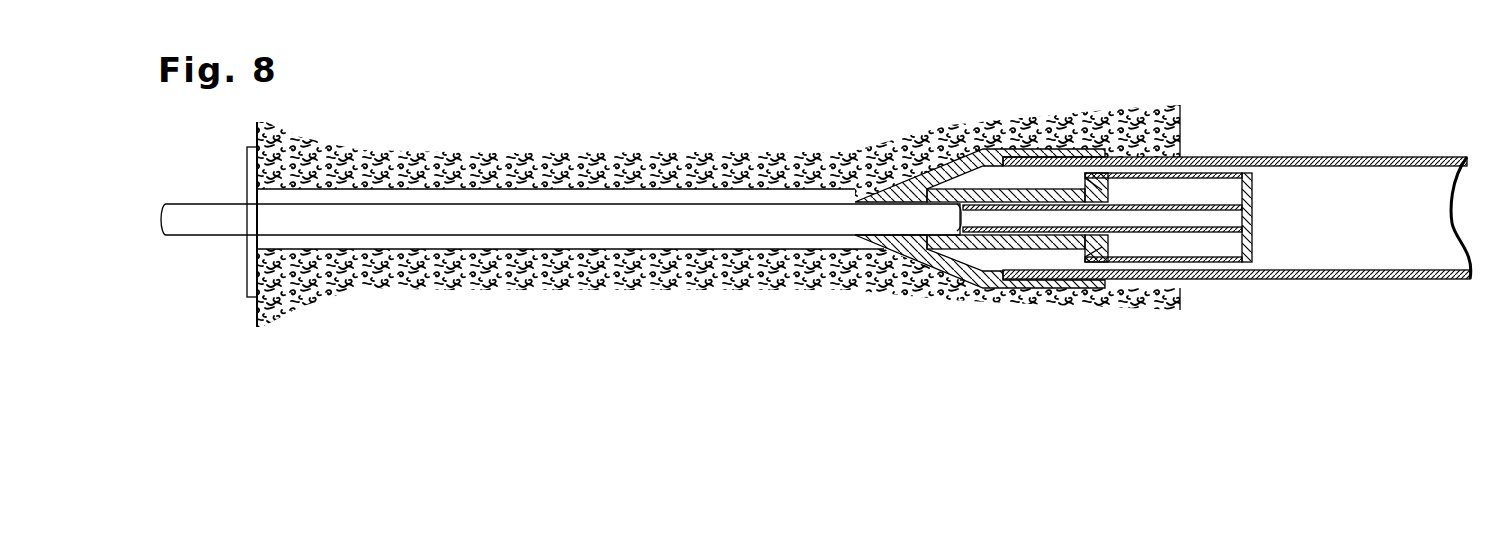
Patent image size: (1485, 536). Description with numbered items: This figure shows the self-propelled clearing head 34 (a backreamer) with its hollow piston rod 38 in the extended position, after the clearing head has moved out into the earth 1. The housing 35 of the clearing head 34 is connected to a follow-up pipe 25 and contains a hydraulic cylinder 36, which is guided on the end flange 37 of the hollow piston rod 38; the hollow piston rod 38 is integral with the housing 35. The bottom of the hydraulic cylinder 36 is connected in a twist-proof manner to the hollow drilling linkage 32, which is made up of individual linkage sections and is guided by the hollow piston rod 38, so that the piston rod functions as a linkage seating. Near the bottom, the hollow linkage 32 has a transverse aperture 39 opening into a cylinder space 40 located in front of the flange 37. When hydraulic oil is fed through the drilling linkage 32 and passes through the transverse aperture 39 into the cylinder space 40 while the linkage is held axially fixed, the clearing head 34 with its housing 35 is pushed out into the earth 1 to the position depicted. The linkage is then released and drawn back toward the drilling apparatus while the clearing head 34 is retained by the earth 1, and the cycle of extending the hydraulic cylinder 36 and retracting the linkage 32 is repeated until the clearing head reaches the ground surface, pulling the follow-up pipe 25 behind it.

The earth 1 is at (584, 160).
The follow-up pipe 25 is at (1355, 157).
The hollow drilling linkage 32 is at (602, 222).
The clearing head 34 is at (1030, 152).
The housing 35 is at (940, 170).
The hydraulic cylinder 36 is at (1245, 262).
The end flange 37 is at (1097, 240).
The hollow piston rod 38 is at (993, 242).
The transverse aperture 39 is at (1238, 203).
The cylinder space 40 is at (1208, 243).